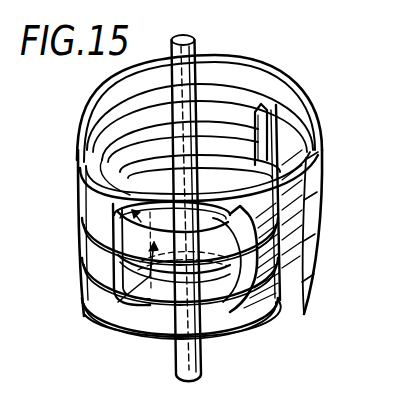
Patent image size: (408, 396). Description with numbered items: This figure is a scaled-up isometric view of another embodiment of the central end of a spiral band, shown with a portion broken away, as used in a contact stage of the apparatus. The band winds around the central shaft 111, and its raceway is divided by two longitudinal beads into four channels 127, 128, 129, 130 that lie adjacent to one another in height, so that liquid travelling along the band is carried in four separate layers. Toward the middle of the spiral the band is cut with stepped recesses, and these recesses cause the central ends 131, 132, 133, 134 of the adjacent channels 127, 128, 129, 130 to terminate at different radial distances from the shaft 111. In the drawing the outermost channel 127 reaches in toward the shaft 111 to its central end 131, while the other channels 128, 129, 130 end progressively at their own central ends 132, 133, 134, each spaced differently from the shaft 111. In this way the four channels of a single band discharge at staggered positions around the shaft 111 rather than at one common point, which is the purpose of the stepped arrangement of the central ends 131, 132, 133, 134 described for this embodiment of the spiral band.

The shaft 111 is at (197, 43).
The channel 127 is at (317, 166).
The channel 128 is at (316, 208).
The channel 129 is at (316, 250).
The channel 130 is at (316, 290).
The central end 131 is at (252, 117).
The central end 132 is at (125, 296).
The central end 133 is at (250, 300).
The central end 134 is at (148, 287).